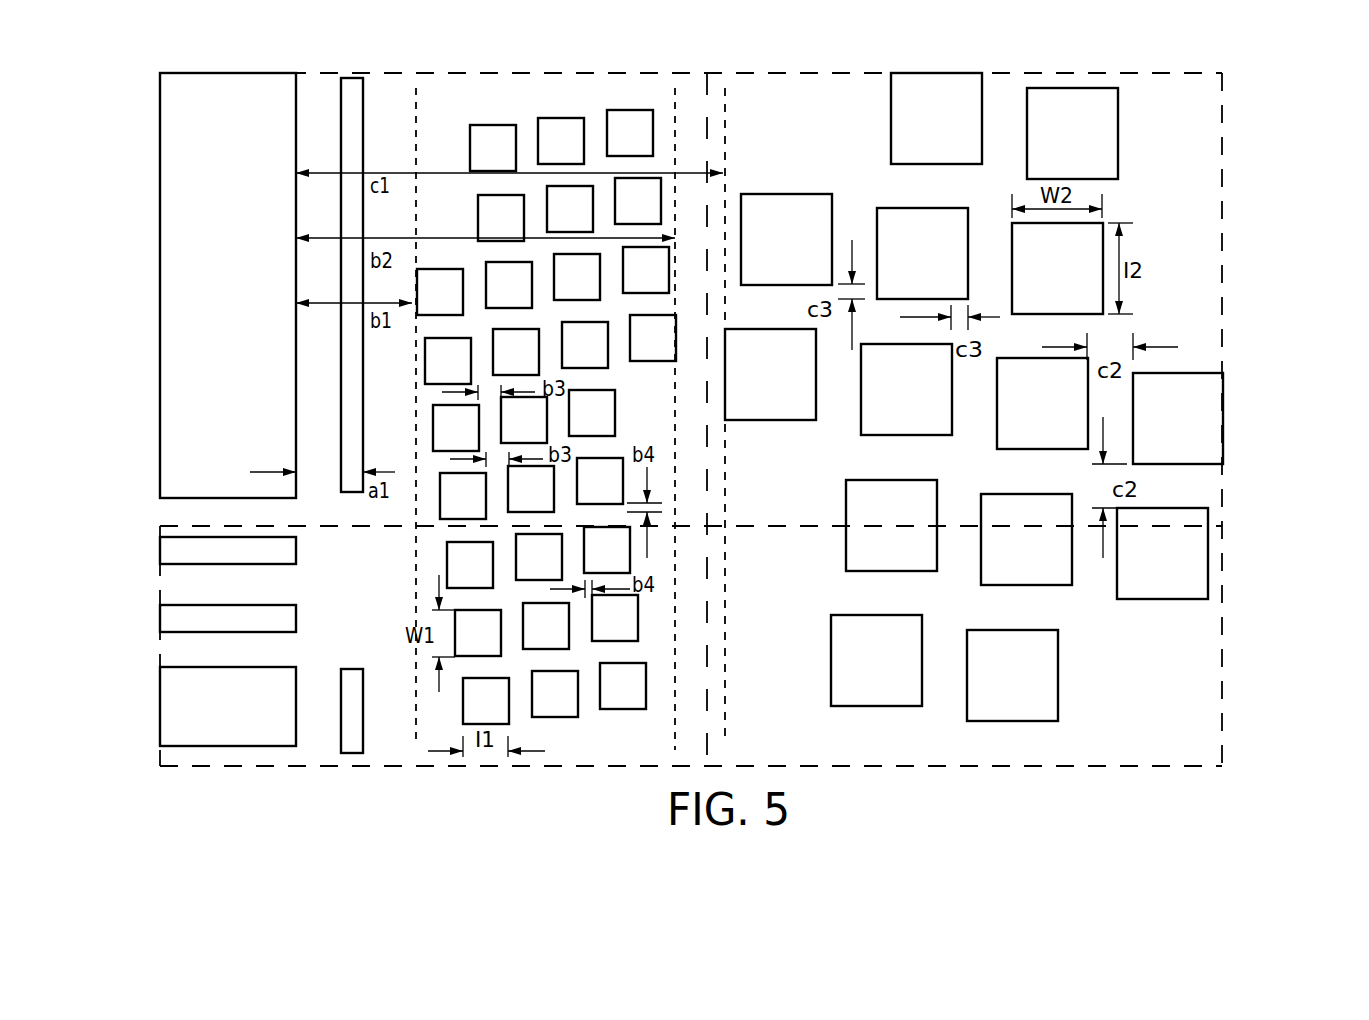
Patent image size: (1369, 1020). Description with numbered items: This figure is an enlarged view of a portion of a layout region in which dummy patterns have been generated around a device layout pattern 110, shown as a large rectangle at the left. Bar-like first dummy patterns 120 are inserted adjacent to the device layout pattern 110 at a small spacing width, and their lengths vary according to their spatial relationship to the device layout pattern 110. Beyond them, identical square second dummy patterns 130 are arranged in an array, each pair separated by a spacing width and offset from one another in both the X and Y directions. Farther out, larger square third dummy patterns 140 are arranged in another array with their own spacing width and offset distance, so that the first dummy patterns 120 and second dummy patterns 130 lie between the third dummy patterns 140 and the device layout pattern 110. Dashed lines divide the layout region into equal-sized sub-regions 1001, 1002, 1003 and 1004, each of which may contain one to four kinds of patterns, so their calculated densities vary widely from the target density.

The device layout pattern 110 is at (236, 284).
The first dummy patterns 120 is at (157, 535).
The second dummy patterns 130 is at (632, 120).
The third dummy patterns 140 is at (940, 93).
The sub-region 1001 is at (160, 526).
The sub-region 1002 is at (1222, 183).
The sub-region 1003 is at (160, 660).
The sub-region 1004 is at (1222, 622).